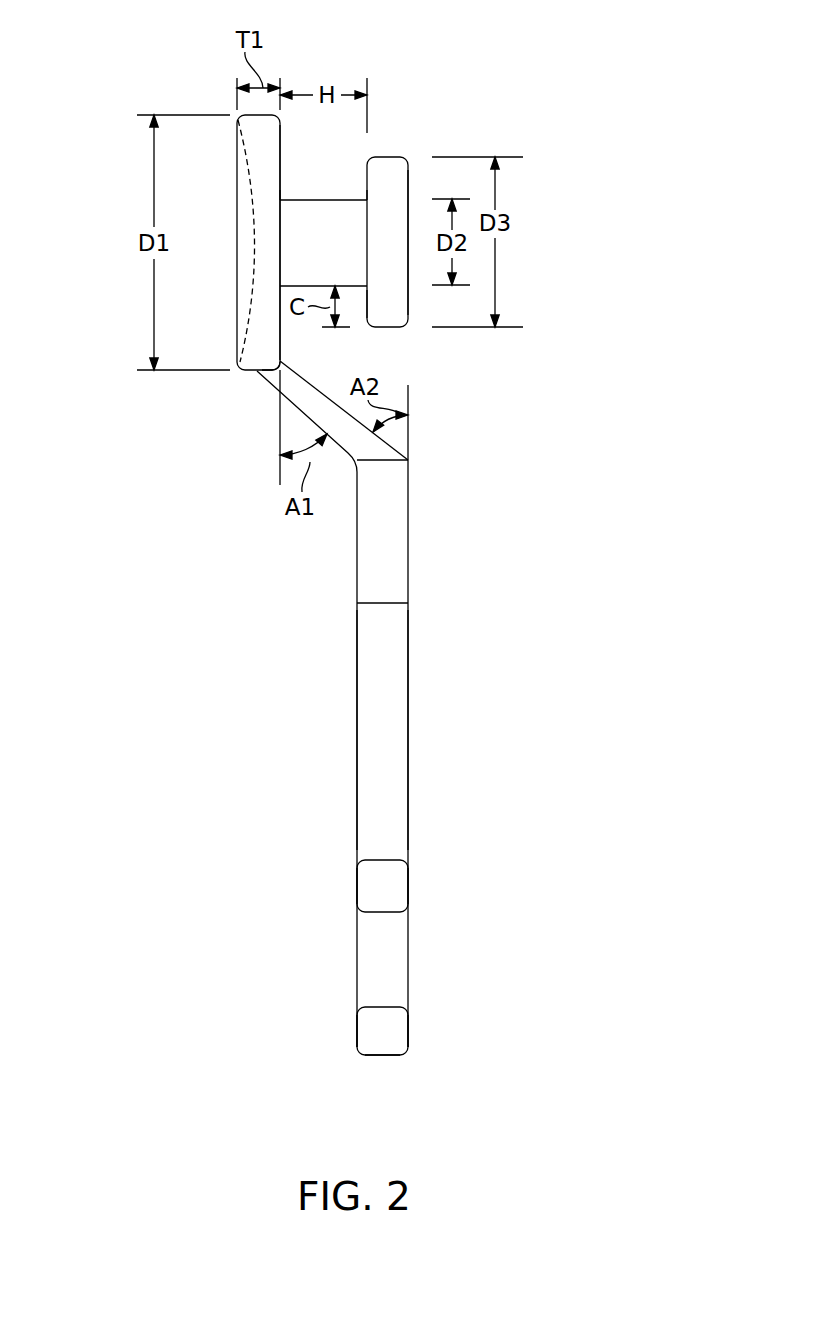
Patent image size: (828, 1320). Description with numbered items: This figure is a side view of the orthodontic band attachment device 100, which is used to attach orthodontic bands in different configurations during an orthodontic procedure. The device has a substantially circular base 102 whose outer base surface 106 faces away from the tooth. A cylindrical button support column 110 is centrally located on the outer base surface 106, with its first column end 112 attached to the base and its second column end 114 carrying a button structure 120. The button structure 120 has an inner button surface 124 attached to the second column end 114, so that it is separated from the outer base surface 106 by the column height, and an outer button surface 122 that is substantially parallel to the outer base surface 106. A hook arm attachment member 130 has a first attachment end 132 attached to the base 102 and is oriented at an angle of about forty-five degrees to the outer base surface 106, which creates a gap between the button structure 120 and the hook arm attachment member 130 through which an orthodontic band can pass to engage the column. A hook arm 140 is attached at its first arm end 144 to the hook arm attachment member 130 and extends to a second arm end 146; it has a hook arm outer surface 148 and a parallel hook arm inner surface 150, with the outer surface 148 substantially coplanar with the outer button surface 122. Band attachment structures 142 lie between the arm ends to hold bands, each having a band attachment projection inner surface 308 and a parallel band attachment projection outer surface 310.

The orthodontic band attachment device 100 is at (500, 80).
The base 102 is at (262, 360).
The outer base surface 106 is at (279, 347).
The button support column 110 is at (330, 199).
The first column end 112 is at (282, 198).
The second column end 114 is at (364, 197).
The button structure 120 is at (387, 170).
The outer button surface 122 is at (412, 302).
The inner button surface 124 is at (363, 300).
The hook arm attachment member 130 is at (353, 440).
The first attachment end 132 is at (268, 370).
The hook arm 140 is at (373, 702).
The band attachment structures 142 is at (420, 862).
The first arm end 144 is at (410, 462).
The second arm end 146 is at (385, 1057).
The hook arm outer surface 148 is at (410, 756).
The hook arm inner surface 150 is at (357, 800).
The band attachment projection inner surface 308 is at (357, 886).
The band attachment projection outer surface 310 is at (408, 892).